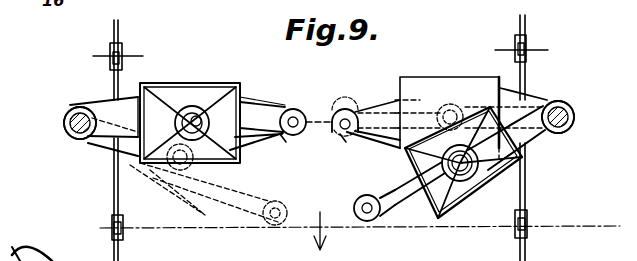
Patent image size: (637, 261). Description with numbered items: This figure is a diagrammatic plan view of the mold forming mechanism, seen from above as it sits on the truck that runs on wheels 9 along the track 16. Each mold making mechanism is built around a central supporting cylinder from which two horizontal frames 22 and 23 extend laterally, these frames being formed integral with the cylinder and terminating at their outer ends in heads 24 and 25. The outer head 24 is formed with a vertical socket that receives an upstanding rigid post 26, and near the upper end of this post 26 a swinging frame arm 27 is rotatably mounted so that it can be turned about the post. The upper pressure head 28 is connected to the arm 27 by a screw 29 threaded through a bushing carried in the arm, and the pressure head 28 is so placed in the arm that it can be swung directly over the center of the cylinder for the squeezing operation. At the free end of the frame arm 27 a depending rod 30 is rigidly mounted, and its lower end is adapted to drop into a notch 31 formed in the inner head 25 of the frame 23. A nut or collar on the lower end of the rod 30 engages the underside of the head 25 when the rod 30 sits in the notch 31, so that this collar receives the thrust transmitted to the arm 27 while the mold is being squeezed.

The wheel 9 is at (112, 63).
The track 16 is at (119, 29).
The horizontal frame 22 is at (108, 101).
The horizontal frame 23 is at (256, 125).
The outer head 24 is at (66, 112).
The inner head 25 is at (344, 108).
The post 26 is at (80, 139).
The swinging frame arm 27 is at (262, 122).
The upper pressure head 28 is at (185, 92).
The screw 29 is at (200, 107).
The depending rod 30 is at (302, 129).
The notch 31 is at (289, 140).